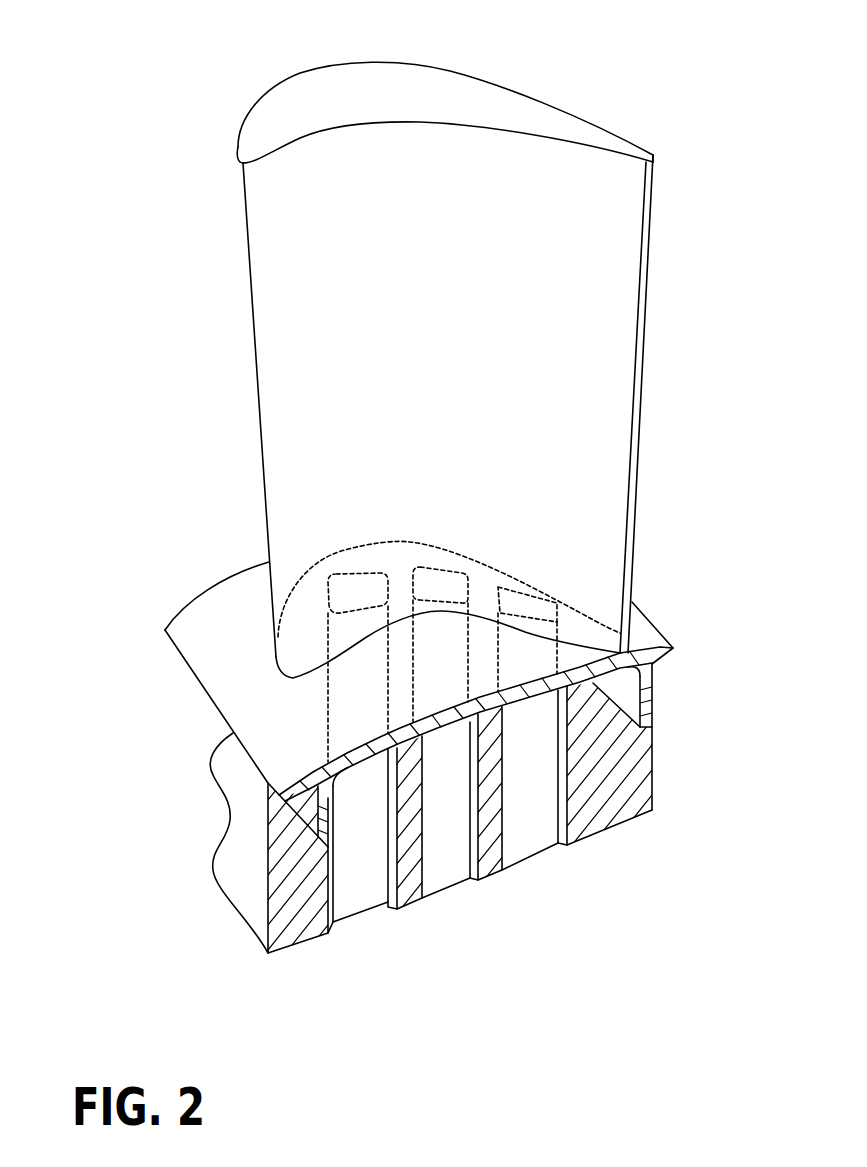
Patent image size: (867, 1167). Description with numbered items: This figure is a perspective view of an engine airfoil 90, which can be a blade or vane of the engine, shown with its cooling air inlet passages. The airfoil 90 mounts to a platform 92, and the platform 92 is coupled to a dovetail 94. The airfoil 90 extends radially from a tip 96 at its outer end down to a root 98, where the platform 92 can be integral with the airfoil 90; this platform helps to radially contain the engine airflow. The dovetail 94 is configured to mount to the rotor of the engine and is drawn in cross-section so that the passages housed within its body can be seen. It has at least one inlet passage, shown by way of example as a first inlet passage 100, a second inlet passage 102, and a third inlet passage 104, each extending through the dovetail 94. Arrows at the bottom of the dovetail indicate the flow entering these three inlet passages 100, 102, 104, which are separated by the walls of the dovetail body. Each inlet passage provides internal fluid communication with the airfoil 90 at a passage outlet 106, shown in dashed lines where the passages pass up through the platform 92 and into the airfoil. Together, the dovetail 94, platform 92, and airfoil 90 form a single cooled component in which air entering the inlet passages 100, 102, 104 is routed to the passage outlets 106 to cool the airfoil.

The airfoil 90 is at (256, 445).
The platform 92 is at (235, 650).
The dovetail 94 is at (253, 835).
The tip 96 is at (332, 105).
The root 98 is at (583, 635).
The first inlet passage 100 is at (367, 938).
The second inlet passage 102 is at (450, 918).
The third inlet passage 104 is at (528, 880).
The passage outlet 106 is at (347, 557).